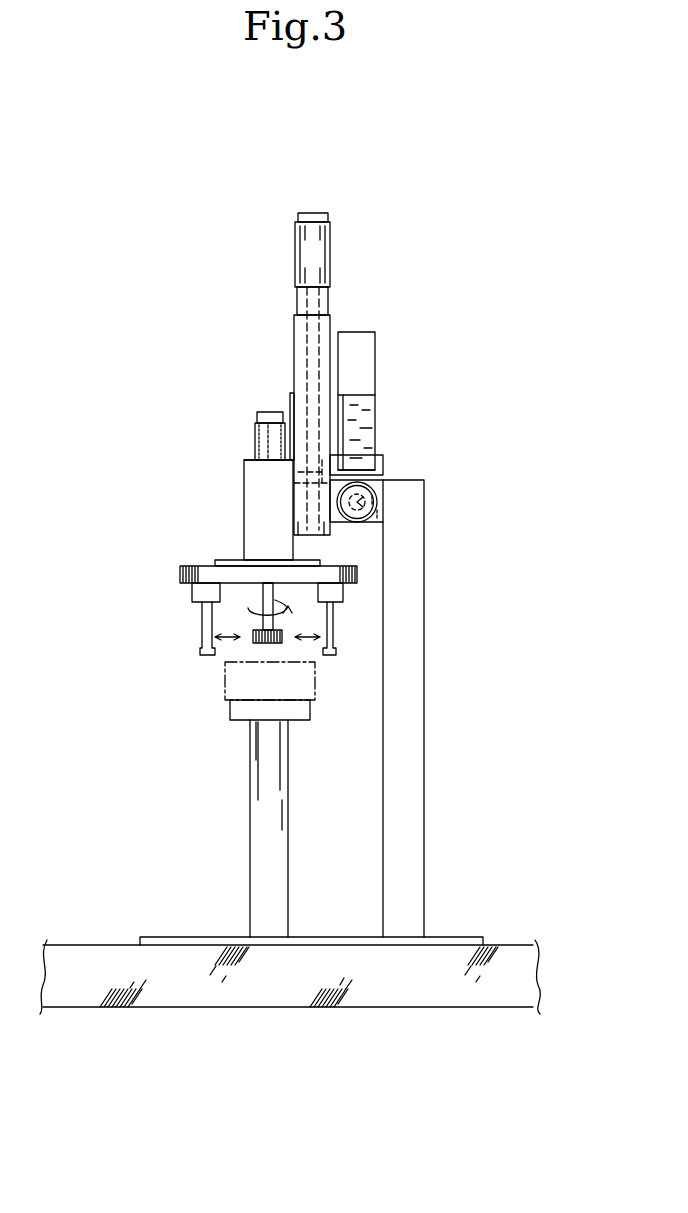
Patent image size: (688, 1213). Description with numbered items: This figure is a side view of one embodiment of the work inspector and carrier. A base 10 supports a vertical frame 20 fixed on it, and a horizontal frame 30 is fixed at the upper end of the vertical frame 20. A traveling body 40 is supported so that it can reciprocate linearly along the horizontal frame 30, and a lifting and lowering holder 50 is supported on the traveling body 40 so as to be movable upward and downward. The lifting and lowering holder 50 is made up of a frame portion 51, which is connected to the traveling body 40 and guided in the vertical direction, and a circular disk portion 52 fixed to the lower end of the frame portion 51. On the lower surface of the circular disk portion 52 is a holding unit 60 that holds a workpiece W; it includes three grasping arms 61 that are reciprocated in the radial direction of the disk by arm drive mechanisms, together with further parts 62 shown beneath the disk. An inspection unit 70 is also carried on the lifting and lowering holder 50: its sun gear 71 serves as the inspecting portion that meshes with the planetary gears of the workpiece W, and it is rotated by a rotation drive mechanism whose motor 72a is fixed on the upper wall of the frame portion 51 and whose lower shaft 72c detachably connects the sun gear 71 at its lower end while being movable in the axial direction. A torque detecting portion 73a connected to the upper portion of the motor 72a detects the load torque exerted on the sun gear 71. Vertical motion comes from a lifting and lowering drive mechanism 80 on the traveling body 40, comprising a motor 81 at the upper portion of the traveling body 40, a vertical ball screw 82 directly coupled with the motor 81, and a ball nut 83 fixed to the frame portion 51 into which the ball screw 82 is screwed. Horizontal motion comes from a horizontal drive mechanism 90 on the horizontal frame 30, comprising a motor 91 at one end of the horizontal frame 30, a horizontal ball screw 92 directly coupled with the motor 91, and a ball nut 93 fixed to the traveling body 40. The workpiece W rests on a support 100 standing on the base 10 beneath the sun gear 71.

The base 10 is at (288, 1020).
The vertical frame 20 is at (435, 780).
The horizontal frame 30 is at (376, 534).
The traveling body 40 is at (288, 314).
The lifting and lowering holder 50 is at (234, 513).
The frame portion 51 is at (244, 482).
The circular disk portion 52 is at (205, 566).
The holding unit 60 is at (182, 613).
The grasping arm 61 is at (202, 648).
The claw holder 62 is at (192, 593).
The inspection unit 70 is at (284, 603).
The sun gear 71 is at (282, 642).
The motor 72a is at (255, 440).
The lower shaft 72c is at (265, 593).
The torque detecting portion 73a is at (263, 443).
The lifting and lowering drive mechanism 80 is at (341, 260).
The motor 81 is at (310, 250).
The ball screw 82 is at (330, 325).
The ball nut 83 is at (302, 467).
The horizontal drive mechanism 90 is at (513, 338).
The motor 91 is at (355, 475).
The ball screw 92 is at (378, 500).
The ball nut 93 is at (380, 515).
The workpiece holder 100 is at (245, 748).
The workpiece W is at (225, 693).